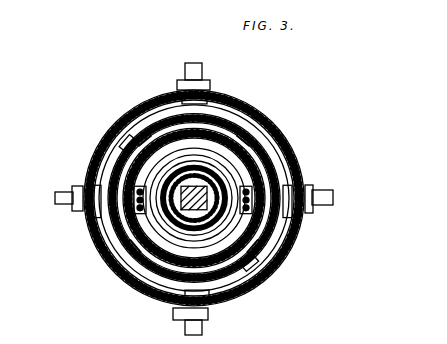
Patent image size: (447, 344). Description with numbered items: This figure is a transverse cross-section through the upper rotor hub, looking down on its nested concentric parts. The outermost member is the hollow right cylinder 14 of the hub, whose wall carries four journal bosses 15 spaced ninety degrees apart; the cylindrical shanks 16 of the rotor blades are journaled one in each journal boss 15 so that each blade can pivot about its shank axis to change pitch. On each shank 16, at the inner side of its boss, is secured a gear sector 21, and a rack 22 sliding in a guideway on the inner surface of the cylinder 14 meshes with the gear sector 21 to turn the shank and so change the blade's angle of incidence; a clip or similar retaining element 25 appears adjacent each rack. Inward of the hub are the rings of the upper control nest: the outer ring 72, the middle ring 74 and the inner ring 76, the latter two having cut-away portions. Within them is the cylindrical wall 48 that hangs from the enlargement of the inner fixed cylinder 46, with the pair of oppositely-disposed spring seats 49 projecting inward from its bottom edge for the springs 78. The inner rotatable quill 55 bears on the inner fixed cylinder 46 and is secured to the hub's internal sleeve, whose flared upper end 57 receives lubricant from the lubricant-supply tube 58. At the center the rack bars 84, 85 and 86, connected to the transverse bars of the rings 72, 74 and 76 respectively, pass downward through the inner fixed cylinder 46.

The hollow right cylinder 14 is at (181, 198).
The journal boss 15 is at (80, 181).
The cylindrical shank 16 is at (62, 192).
The gear sector 21 is at (174, 305).
The rack 22 is at (193, 214).
The clip 25 is at (161, 228).
The inner fixed cylinder 46 is at (194, 211).
The cylindrical wall 48 is at (194, 197).
The spring seat 49 is at (194, 198).
The inner rotatable quill 55 is at (194, 195).
The flared upper end 57 is at (241, 188).
The lubricant-supply tube 58 is at (194, 197).
The outer ring 72 is at (237, 103).
The middle ring 74 is at (178, 87).
The inner ring 76 is at (194, 175).
The spring 78 is at (143, 188).
The rack bar 84 is at (194, 177).
The rack bar 85 is at (201, 185).
The rack bar 86 is at (201, 198).